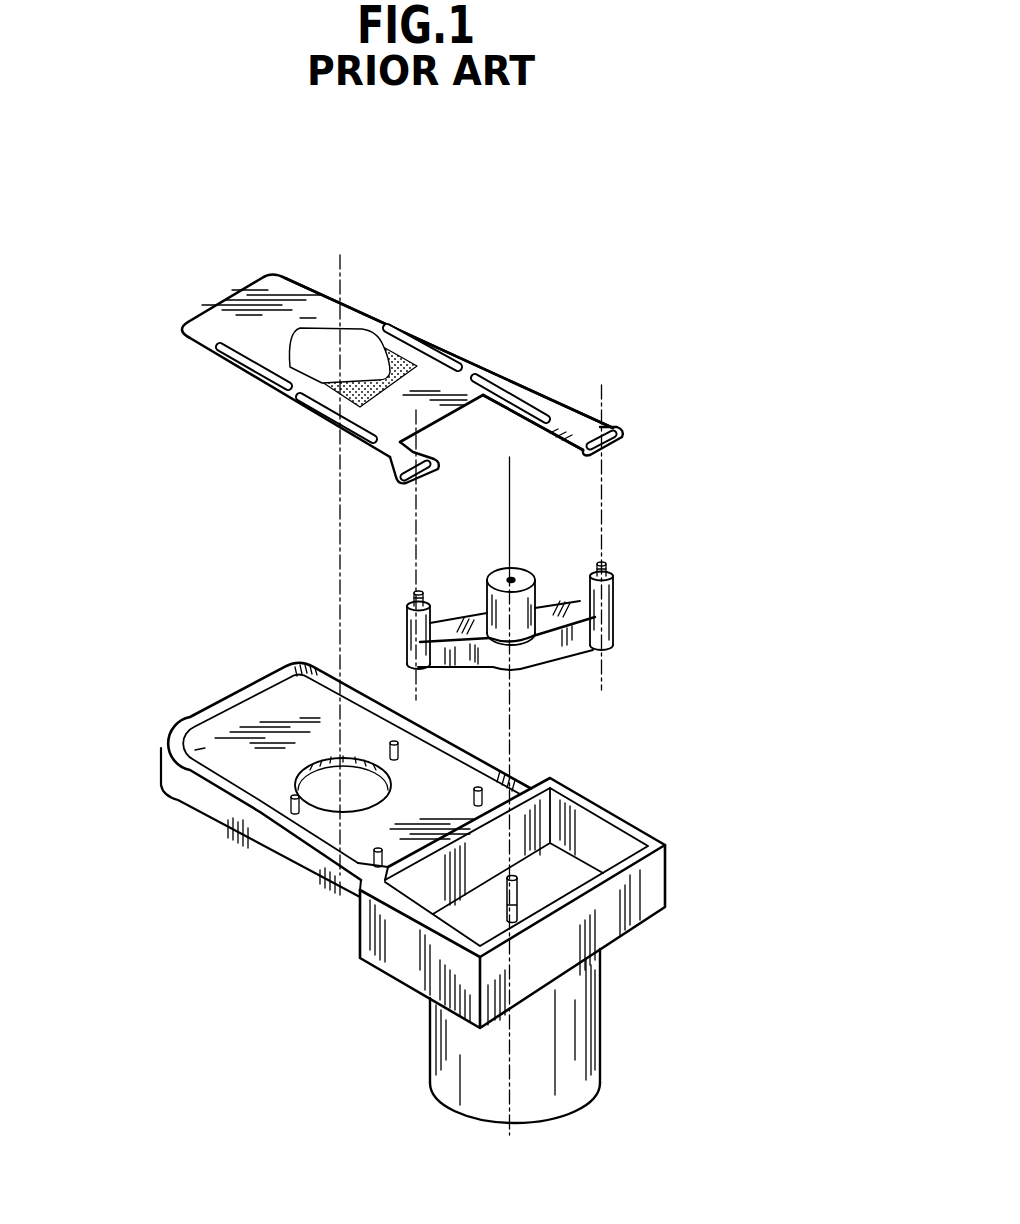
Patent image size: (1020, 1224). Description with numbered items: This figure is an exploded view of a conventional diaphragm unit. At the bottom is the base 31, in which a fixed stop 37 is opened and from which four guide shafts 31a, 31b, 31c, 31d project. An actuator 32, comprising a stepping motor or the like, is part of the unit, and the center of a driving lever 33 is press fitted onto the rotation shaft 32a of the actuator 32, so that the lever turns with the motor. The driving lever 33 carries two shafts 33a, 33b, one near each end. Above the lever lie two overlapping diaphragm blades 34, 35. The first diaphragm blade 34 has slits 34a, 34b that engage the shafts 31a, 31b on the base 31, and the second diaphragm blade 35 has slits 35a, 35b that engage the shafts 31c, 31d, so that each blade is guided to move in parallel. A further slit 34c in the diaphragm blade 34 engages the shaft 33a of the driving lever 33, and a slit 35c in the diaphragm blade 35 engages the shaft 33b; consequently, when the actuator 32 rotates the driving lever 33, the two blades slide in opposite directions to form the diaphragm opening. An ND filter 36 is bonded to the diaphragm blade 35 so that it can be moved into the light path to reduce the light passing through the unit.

The base 31 is at (630, 925).
The shaft 31a is at (292, 808).
The shaft 31b is at (373, 860).
The shaft 31c is at (400, 750).
The shaft 31d is at (487, 795).
The actuator 32 is at (573, 1022).
The rotation shaft 32a is at (518, 897).
The driving lever 33 is at (590, 650).
The shaft 33a is at (405, 598).
The shaft 33b is at (610, 570).
The diaphragm blade 34 is at (207, 333).
The slit 34a is at (250, 372).
The slit 34b is at (323, 415).
The slit 34c is at (382, 473).
The diaphragm blade 35 is at (442, 380).
The slit 35a is at (420, 337).
The slit 35b is at (520, 397).
The slit 35c is at (620, 442).
The ND filter 36 is at (368, 362).
The fixed stop 37 is at (292, 772).